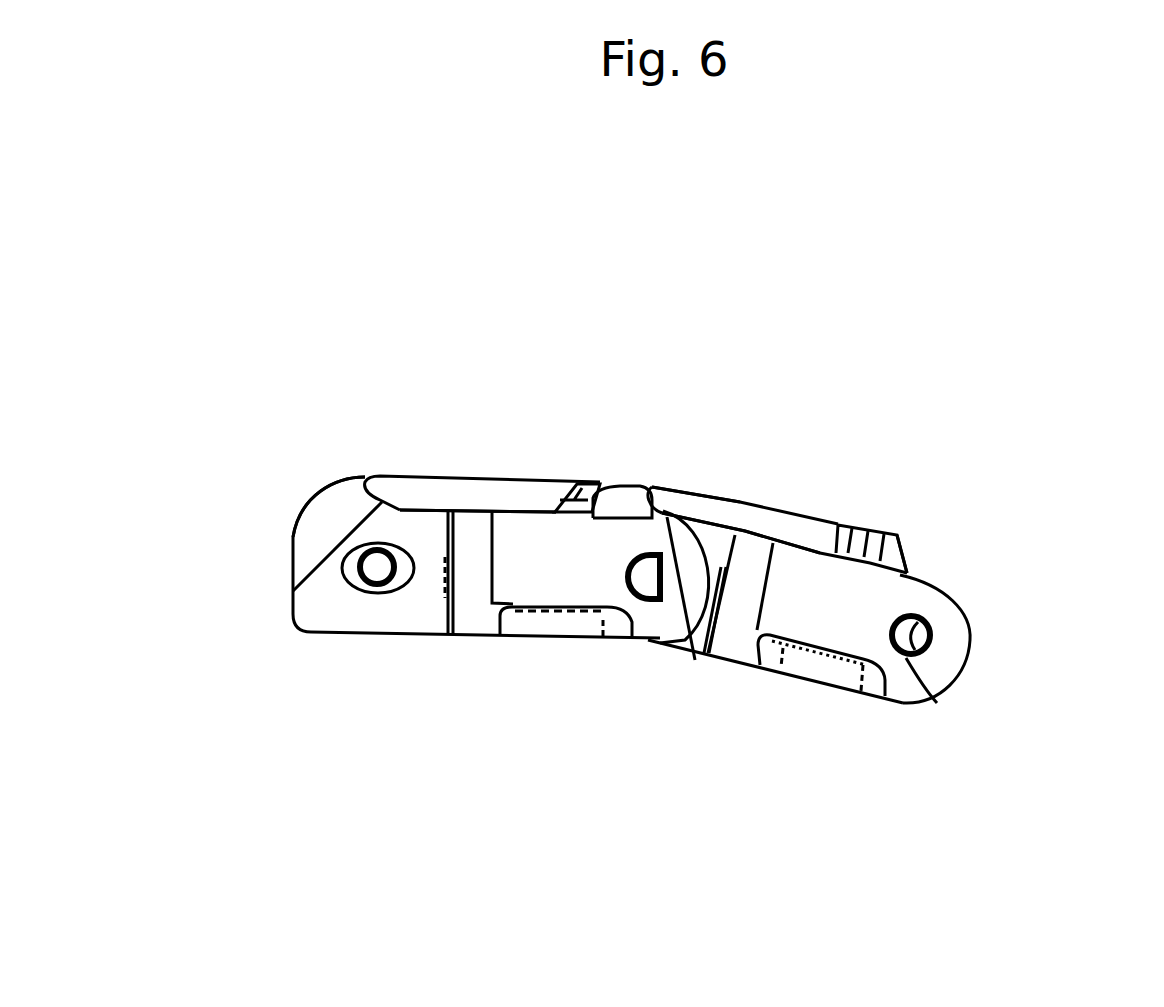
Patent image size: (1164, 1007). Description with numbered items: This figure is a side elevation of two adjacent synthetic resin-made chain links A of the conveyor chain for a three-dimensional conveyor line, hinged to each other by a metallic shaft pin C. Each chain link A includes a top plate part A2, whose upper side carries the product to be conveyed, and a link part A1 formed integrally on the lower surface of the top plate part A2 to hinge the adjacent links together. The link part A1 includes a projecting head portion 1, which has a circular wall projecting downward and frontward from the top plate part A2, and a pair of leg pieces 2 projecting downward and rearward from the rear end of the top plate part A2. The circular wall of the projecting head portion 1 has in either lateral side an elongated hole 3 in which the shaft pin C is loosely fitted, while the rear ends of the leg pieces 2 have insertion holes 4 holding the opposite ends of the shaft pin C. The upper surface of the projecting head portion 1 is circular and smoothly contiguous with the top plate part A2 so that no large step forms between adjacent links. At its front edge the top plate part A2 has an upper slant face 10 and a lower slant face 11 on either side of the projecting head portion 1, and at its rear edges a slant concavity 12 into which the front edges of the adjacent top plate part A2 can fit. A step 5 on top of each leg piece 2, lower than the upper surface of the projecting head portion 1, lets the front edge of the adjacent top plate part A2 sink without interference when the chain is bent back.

The projecting head portion 1 is at (521, 486).
The upper slant face 10 is at (569, 421).
The chain link A is at (589, 367).
The top plate part A2 is at (699, 390).
The slant concavity 12 is at (810, 414).
The step 5 is at (867, 410).
The leg pieces 2 is at (785, 683).
The lower slant face 11 is at (452, 682).
The link part A1 is at (652, 711).
The elongated hole 3 is at (325, 663).
The shaft pin C is at (737, 677).
The insertion holes 4 is at (974, 733).